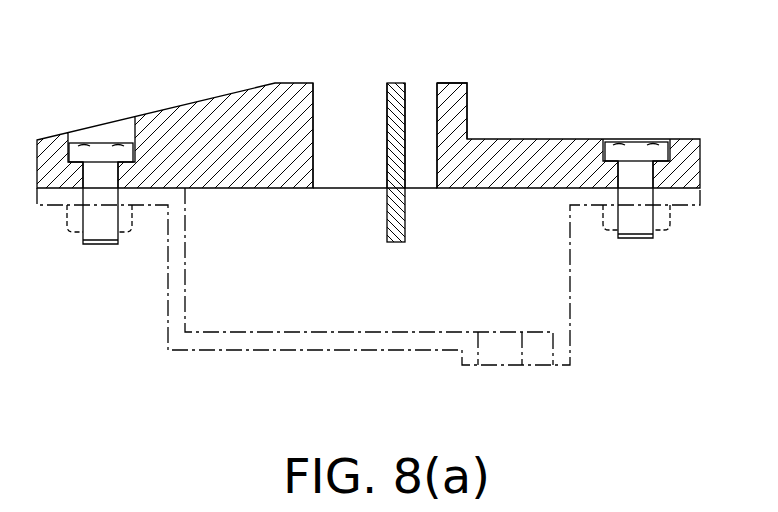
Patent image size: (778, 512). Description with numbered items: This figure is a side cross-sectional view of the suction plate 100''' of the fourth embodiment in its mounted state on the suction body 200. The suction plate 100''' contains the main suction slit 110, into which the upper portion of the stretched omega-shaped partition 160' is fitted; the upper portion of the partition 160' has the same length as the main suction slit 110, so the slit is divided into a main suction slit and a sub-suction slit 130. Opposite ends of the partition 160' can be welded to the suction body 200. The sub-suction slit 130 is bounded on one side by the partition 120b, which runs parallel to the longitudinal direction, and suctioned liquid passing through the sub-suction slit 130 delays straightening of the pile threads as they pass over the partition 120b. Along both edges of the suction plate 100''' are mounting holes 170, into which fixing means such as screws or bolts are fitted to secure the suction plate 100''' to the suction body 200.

The suction plate 100''' is at (368, 114).
The main suction slit 110 is at (332, 102).
The partition 160' is at (393, 134).
The sub-suction slit 130 is at (418, 95).
The partition 120b is at (458, 107).
The mounting holes 170 is at (120, 132).
The suction body 200 is at (563, 309).